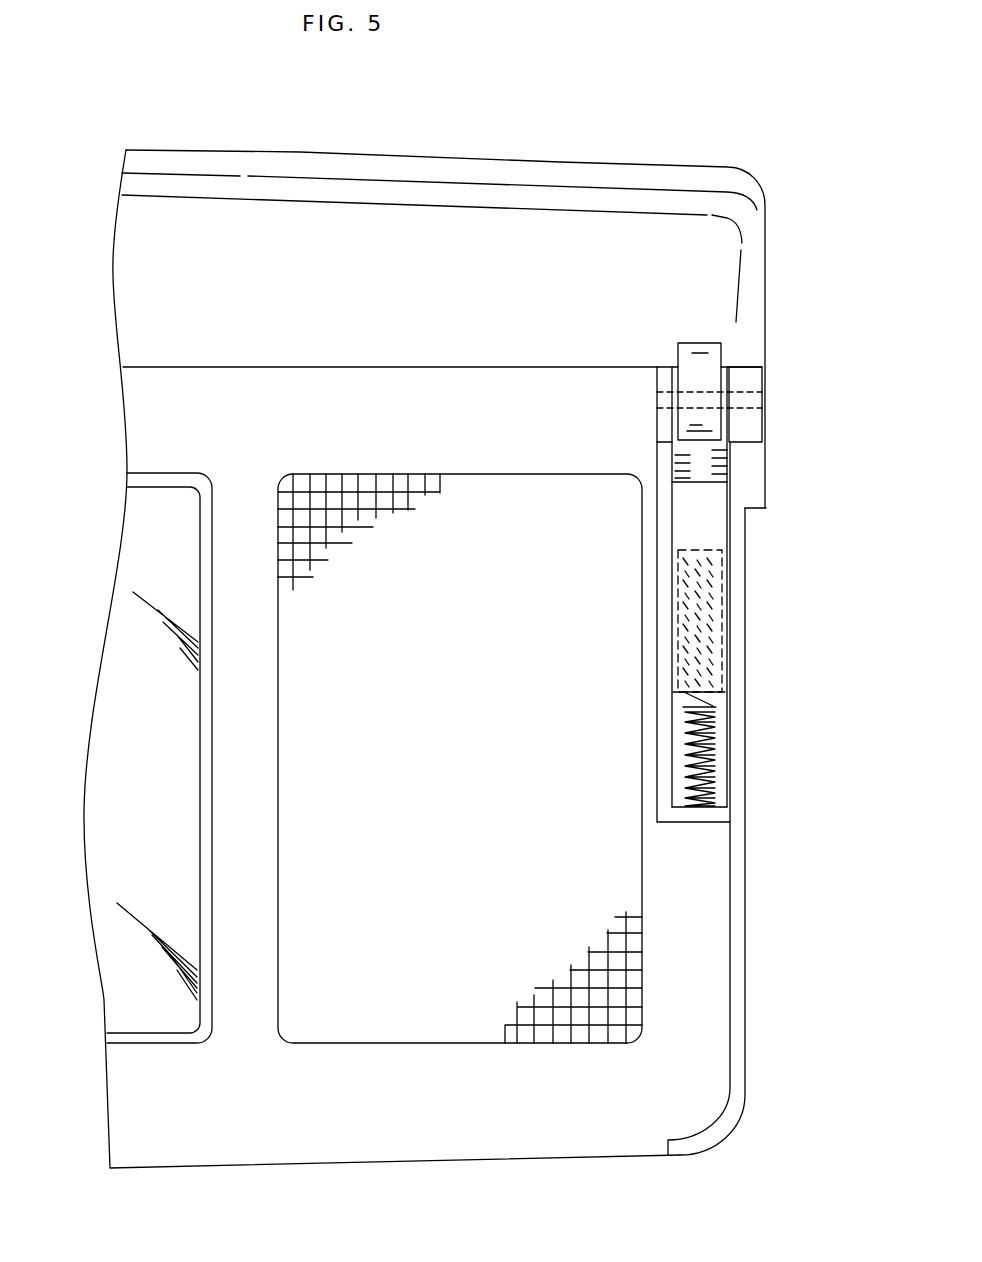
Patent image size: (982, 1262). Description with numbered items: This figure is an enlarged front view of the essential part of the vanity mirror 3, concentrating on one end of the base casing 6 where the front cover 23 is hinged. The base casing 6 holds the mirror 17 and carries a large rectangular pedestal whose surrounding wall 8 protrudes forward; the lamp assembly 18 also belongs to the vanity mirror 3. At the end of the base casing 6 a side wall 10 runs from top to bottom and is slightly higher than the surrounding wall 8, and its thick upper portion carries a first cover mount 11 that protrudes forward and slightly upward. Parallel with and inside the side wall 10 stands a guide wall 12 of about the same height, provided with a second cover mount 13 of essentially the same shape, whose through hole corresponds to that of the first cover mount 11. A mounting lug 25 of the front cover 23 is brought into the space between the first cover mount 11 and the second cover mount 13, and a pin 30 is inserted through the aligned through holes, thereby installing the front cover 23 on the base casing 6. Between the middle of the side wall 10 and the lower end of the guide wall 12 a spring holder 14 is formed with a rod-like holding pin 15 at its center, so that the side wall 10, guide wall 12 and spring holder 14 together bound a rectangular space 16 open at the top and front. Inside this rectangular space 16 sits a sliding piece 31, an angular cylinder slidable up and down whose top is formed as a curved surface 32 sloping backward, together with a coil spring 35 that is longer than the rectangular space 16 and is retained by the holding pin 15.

The vanity mirror 3 is at (594, 137).
The front cover 23 is at (407, 152).
The pin 30 is at (745, 390).
The mounting lug 25 is at (692, 383).
The first cover mount 11 is at (757, 418).
The second cover mount 13 is at (663, 420).
The curved surface 32 is at (707, 450).
The sliding piece 31 is at (715, 527).
The guide wall 12 is at (663, 623).
The coil spring 35 is at (747, 703).
The rectangular space 16 is at (680, 718).
The holding pin 15 is at (720, 750).
The spring holder 14 is at (698, 818).
The side wall 10 is at (742, 882).
The base casing 6 is at (745, 970).
The mirror 17 is at (138, 1005).
The surrounding wall 8 is at (192, 1037).
The lamp assembly 18 is at (477, 982).